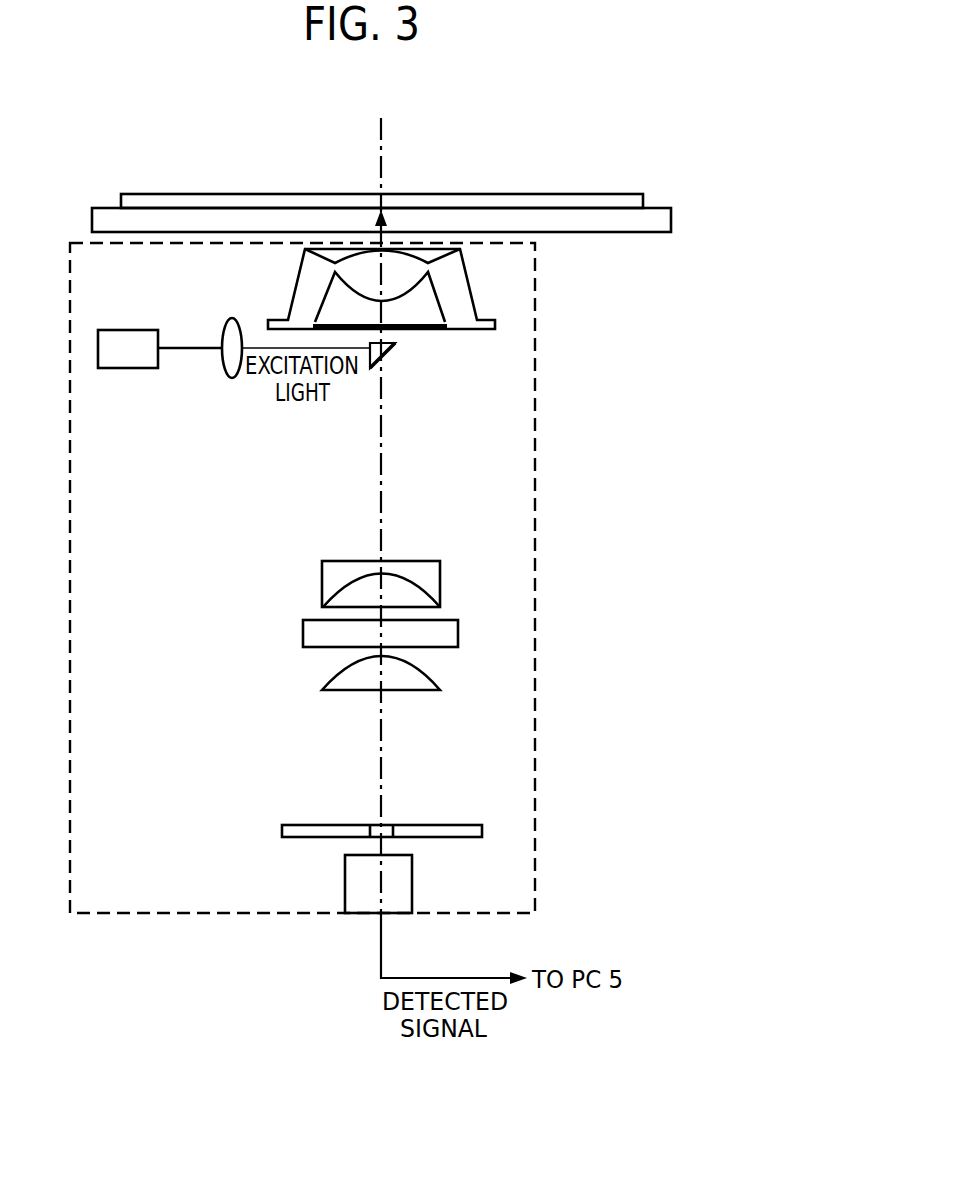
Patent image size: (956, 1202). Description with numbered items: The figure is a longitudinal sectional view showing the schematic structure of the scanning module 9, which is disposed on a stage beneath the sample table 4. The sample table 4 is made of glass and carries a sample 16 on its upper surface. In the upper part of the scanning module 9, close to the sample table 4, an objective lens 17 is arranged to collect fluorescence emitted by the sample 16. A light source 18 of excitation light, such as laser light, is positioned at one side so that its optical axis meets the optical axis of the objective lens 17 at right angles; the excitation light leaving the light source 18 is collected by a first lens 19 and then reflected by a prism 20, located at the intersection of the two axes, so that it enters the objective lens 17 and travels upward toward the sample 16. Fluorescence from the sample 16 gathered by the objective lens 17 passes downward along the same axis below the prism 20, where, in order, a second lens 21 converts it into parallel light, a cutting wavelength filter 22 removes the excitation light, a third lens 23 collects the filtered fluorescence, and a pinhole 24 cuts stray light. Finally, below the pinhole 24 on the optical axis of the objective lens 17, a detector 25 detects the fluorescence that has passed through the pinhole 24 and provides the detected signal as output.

The sample table 4 is at (92, 222).
The sample 16 is at (158, 194).
The scanning module 9 is at (535, 502).
The objective lens 17 is at (298, 273).
The light source 18 is at (130, 330).
The first lens 19 is at (232, 379).
The prism 20 is at (395, 350).
The second lens 21 is at (322, 585).
The cutting wavelength filter 22 is at (303, 638).
The third lens 23 is at (322, 690).
The pinhole 24 is at (282, 832).
The detector 25 is at (345, 890).